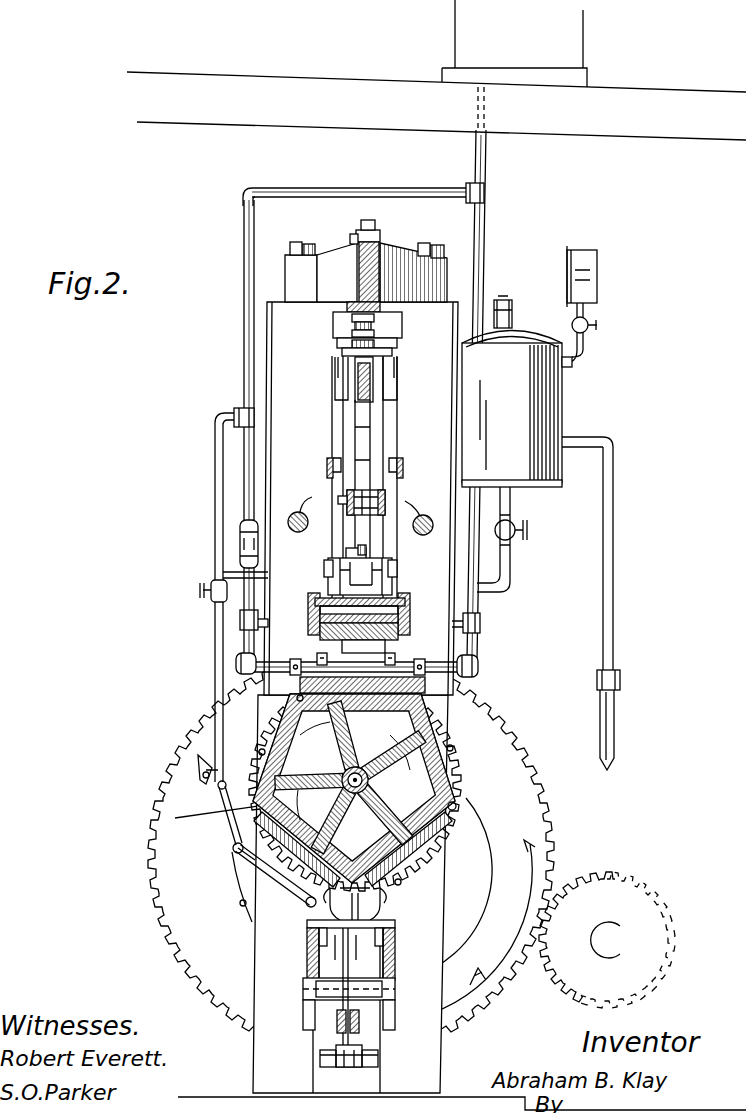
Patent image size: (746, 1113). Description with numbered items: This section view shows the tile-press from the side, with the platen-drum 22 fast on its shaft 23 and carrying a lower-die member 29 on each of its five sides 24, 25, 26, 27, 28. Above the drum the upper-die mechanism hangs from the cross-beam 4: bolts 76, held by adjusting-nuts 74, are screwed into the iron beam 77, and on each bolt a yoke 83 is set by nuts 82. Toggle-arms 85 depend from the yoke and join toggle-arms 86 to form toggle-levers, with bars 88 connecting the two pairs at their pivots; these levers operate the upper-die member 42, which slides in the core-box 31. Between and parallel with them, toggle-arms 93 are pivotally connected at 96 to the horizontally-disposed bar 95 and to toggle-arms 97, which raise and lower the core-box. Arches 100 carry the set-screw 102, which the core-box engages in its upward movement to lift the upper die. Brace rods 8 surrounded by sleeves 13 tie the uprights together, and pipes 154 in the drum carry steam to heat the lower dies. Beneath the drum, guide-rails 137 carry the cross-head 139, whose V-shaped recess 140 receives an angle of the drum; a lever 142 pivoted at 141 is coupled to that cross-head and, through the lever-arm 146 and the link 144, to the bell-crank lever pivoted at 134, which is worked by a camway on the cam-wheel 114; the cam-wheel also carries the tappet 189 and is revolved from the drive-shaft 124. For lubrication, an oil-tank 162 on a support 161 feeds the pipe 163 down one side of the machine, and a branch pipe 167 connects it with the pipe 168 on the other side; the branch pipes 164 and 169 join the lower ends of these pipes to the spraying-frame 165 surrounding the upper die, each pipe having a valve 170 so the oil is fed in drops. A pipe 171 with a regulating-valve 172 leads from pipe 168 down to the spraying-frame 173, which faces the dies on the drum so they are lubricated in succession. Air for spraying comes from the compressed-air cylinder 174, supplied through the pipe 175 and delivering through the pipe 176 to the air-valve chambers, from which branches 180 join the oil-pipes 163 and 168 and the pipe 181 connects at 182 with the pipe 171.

The support 161 is at (362, 111).
The oil-tank 162 is at (545, 61).
The pipe 163 is at (486, 155).
The branch pipe 167 is at (362, 184).
The pipe 168 is at (244, 365).
The pipe 171 is at (215, 503).
The branch pipe 164 is at (478, 665).
The spraying-frame 165 is at (419, 659).
The branch pipe 169 is at (293, 659).
The branches 180 is at (250, 632).
The pipe 181 is at (223, 575).
The regulating-valve 172 is at (205, 600).
The valve 170 is at (240, 543).
The pipe 176 is at (510, 497).
The compressed-air cylinder 174 is at (563, 404).
The pipe 175 is at (613, 510).
The cross-beam 4 is at (380, 255).
The bolts 76 is at (370, 222).
The adjusting-nuts 74 is at (350, 238).
The nuts 82 is at (333, 330).
The yoke 83 is at (342, 350).
The toggle-arm 85 is at (335, 393).
The iron beam 77 is at (356, 390).
The toggle-arms 93 is at (368, 450).
The bars 88 is at (327, 468).
The pivotal connections 96 is at (385, 503).
The horizontally-disposed bar 95 is at (338, 507).
The sleeve 13 is at (294, 513).
The rods 8 is at (410, 516).
The toggle-arms 97 is at (346, 553).
The set-screw 102 is at (372, 568).
The arches 100 is at (328, 576).
The toggle-arms 86 is at (397, 562).
The core-box 31 is at (405, 612).
The upper-die member 42 is at (308, 622).
The side of platen-drum 24 is at (440, 689).
The lower-die member 29 is at (300, 695).
The platen-drum 22 is at (464, 762).
The shaft 23 is at (332, 800).
The pipes 154 is at (330, 753).
The side of platen-drum 25 is at (457, 808).
The cam-wheel 114 is at (548, 825).
The pivot 134 is at (480, 838).
The side of platen-drum 26 is at (480, 885).
The side of platen-drum 28 is at (175, 818).
The tappet 189 is at (198, 760).
The connection 182 is at (218, 790).
The spraying-frame 173 is at (285, 912).
The drive-shaft 124 is at (630, 947).
The V-shaped recess 140 is at (355, 904).
The cross-head 139 is at (380, 912).
The side of platen-drum 27 is at (312, 926).
The guide-rails 137 is at (292, 965).
The pivot 141 is at (365, 989).
The lever 142 is at (360, 1038).
The lever-arm 146 is at (338, 1025).
The link 144 is at (365, 1068).